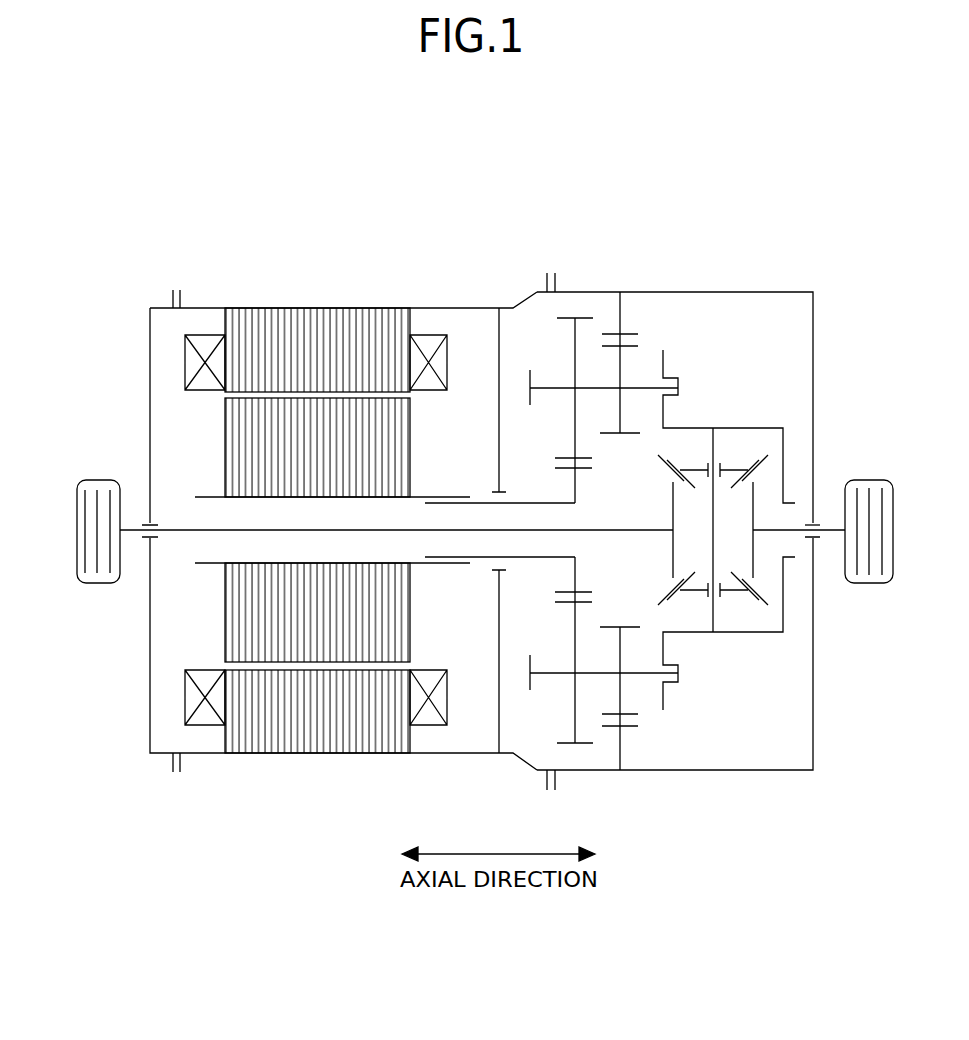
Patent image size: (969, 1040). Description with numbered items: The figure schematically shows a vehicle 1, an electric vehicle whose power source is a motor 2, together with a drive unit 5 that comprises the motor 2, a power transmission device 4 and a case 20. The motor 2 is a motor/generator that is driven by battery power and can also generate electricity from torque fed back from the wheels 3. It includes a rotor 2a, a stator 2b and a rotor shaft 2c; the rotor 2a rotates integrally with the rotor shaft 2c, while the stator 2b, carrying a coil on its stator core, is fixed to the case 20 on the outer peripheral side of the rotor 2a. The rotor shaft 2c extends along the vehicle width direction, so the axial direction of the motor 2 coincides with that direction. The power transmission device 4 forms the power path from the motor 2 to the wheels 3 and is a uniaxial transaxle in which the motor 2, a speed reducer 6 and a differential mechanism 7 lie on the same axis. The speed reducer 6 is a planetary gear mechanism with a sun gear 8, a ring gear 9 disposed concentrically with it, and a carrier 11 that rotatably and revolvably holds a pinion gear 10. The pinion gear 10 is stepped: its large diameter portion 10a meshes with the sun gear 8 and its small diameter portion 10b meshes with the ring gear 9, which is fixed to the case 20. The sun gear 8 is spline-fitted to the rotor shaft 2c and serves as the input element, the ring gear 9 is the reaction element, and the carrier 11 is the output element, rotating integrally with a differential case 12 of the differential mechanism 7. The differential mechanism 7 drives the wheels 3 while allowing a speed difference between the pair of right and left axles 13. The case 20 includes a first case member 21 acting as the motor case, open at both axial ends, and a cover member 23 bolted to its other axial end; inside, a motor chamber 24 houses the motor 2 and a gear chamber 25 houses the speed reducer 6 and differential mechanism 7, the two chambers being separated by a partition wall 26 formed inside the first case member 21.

The vehicle 1 is at (752, 172).
The motor 2 is at (275, 489).
The rotor 2a is at (225, 423).
The stator 2b is at (225, 323).
The rotor shaft 2c is at (203, 497).
The wheels 3 is at (93, 585).
The power transmission device 4 is at (702, 490).
The drive unit 5 is at (500, 198).
The speed reducer 6 is at (536, 324).
The differential mechanism 7 is at (776, 482).
The sun gear 8 is at (556, 470).
The ring gear 9 is at (638, 330).
The pinion gear 10 is at (590, 305).
The large diameter portion 10a is at (570, 316).
The small diameter portion 10b is at (628, 352).
The carrier 11 is at (664, 370).
The differential case 12 is at (728, 428).
The axles 13 is at (133, 518).
The case 20 is at (778, 290).
The first case member 21 is at (428, 308).
The cover member 23 is at (165, 308).
The motor chamber 24 is at (500, 486).
The gear chamber 25 is at (793, 416).
The partition wall 26 is at (497, 342).